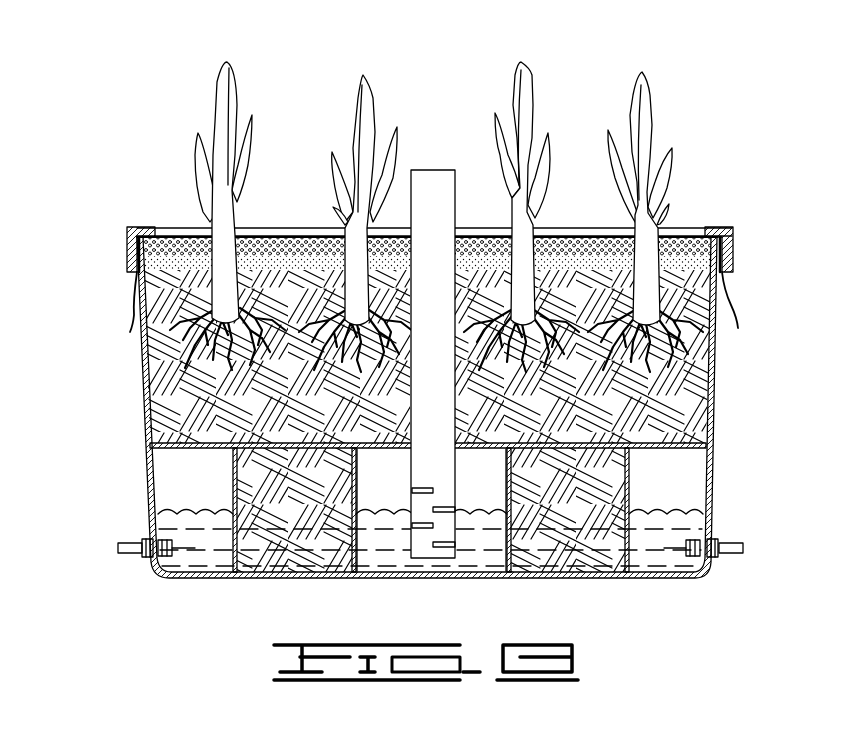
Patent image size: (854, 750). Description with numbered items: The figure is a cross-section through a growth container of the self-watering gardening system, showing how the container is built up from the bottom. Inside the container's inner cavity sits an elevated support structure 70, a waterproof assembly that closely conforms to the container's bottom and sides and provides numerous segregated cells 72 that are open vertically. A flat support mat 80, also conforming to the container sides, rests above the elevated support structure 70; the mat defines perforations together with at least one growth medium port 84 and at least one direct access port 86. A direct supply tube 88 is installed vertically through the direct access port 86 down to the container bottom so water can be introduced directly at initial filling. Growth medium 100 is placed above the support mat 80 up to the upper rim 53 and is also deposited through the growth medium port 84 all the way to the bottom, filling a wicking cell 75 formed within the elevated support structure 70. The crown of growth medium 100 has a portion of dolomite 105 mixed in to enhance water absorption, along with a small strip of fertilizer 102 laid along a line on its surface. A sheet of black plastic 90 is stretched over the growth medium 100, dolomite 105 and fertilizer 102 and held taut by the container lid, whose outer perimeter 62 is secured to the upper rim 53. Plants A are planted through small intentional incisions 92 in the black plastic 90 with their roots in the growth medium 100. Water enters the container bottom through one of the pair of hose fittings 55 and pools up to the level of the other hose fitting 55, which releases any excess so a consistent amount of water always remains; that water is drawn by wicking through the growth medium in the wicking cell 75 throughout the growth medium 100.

The upper rim 53 is at (140, 243).
The hose fittings 55 is at (123, 543).
The outer perimeter 62 is at (148, 226).
The elevated support structure 70 is at (233, 490).
The segregated cells 72 is at (478, 493).
The wicking cell 75 is at (592, 497).
The flat support mat 80 is at (150, 396).
The growth medium port 84 is at (313, 450).
The direct access port 86 is at (407, 455).
The direct supply tube 88 is at (422, 170).
The sheet of black plastic 90 is at (287, 237).
The intentional incisions 92 is at (665, 228).
The growth medium 100 is at (663, 413).
The strip of fertilizer 102 is at (733, 240).
The dolomite 105 is at (183, 273).
The plants A is at (215, 108).